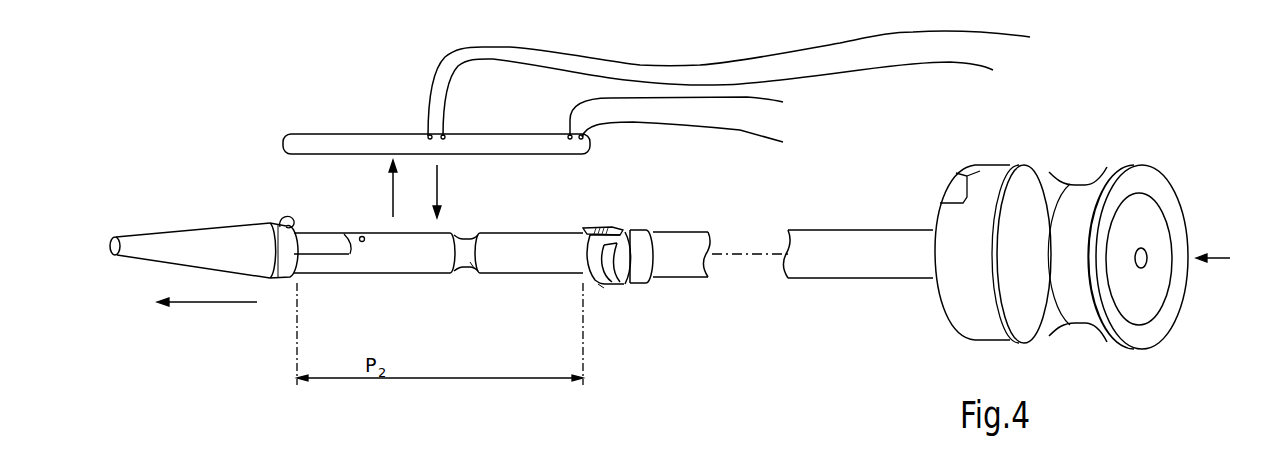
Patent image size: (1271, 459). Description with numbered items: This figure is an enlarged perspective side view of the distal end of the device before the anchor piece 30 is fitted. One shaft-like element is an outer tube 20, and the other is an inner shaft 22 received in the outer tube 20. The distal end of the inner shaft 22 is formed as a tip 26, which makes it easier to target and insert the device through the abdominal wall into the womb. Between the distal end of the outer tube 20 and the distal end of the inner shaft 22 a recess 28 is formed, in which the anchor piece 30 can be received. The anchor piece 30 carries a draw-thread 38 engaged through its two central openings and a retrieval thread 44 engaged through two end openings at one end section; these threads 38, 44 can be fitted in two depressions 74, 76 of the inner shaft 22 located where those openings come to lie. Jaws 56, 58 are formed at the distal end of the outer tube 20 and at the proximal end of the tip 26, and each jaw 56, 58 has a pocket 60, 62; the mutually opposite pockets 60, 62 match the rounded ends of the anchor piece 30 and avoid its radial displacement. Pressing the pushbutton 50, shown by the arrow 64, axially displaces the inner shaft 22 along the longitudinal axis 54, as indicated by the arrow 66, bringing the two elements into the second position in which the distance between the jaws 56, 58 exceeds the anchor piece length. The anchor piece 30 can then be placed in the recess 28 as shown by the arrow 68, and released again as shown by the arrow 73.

The outer tube 20 is at (680, 242).
The inner shaft 22 is at (510, 236).
The tip 26 is at (187, 240).
The recess 28 is at (462, 287).
The anchor piece 30 is at (503, 147).
The draw-thread 38 is at (730, 59).
The retrieval thread 44 is at (745, 98).
The pushbutton 50 is at (1147, 248).
The longitudinal axis 54 is at (755, 250).
The jaw 56 is at (640, 247).
The jaw 58 is at (282, 226).
The pocket 60 is at (623, 229).
The pocket 62 is at (297, 222).
The arrow 64 is at (1217, 261).
The arrow 66 is at (207, 304).
The arrow 68 is at (440, 183).
The arrow 73 is at (393, 195).
The depression 74 is at (472, 265).
The depression 76 is at (600, 286).